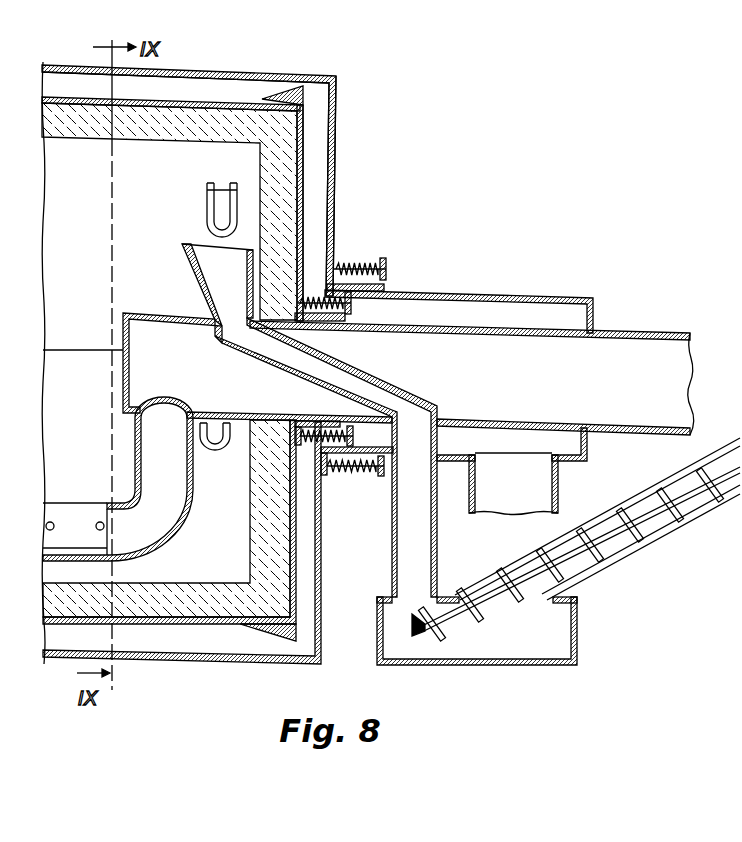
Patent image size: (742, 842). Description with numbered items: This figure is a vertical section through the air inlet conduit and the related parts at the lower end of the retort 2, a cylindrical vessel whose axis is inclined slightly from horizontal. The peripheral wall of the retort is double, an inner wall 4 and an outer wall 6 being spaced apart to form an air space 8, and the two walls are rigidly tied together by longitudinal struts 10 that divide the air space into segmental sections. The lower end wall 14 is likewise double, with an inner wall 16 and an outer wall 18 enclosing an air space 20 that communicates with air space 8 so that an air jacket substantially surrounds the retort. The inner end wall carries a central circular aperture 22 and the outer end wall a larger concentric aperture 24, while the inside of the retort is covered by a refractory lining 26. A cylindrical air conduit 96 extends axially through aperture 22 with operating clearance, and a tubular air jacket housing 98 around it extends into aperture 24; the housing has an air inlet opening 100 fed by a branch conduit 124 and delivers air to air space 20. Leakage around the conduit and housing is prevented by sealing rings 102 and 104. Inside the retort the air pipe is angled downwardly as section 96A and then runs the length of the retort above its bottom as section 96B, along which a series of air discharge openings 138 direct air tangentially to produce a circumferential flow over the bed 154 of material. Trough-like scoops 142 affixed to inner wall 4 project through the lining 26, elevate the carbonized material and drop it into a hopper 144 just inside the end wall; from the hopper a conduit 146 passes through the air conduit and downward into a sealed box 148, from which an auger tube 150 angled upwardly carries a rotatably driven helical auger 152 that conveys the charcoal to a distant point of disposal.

The retort 2 is at (189, 165).
The inner wall 4 is at (226, 100).
The outer wall 6 is at (197, 78).
The air space 8 is at (175, 80).
The struts 10 is at (303, 100).
The lower end wall 14 is at (340, 155).
The inner wall 16 is at (305, 140).
The outer wall 18 is at (337, 187).
The air space 20 is at (313, 211).
The central circular aperture 22 is at (298, 327).
The central circular aperture 24 is at (326, 289).
The lining 26 is at (153, 143).
The air conduit 96 is at (645, 333).
The air conduit section 96A is at (190, 477).
The air conduit section 96B is at (68, 503).
The tubular air jacket housing 98 is at (481, 291).
The air inlet opening 100 is at (513, 453).
The sealing ring 102 is at (295, 442).
The sealing ring 104 is at (327, 480).
The branch conduit 124 is at (466, 515).
The air discharge openings 138 is at (98, 530).
The trough-like scoops 142 is at (207, 209).
The hopper 144 is at (193, 274).
The conduit 146 is at (350, 347).
The sealed box 148 is at (493, 665).
The auger tube 150 is at (683, 523).
The helical auger 152 is at (630, 561).
The bed 154 is at (74, 365).